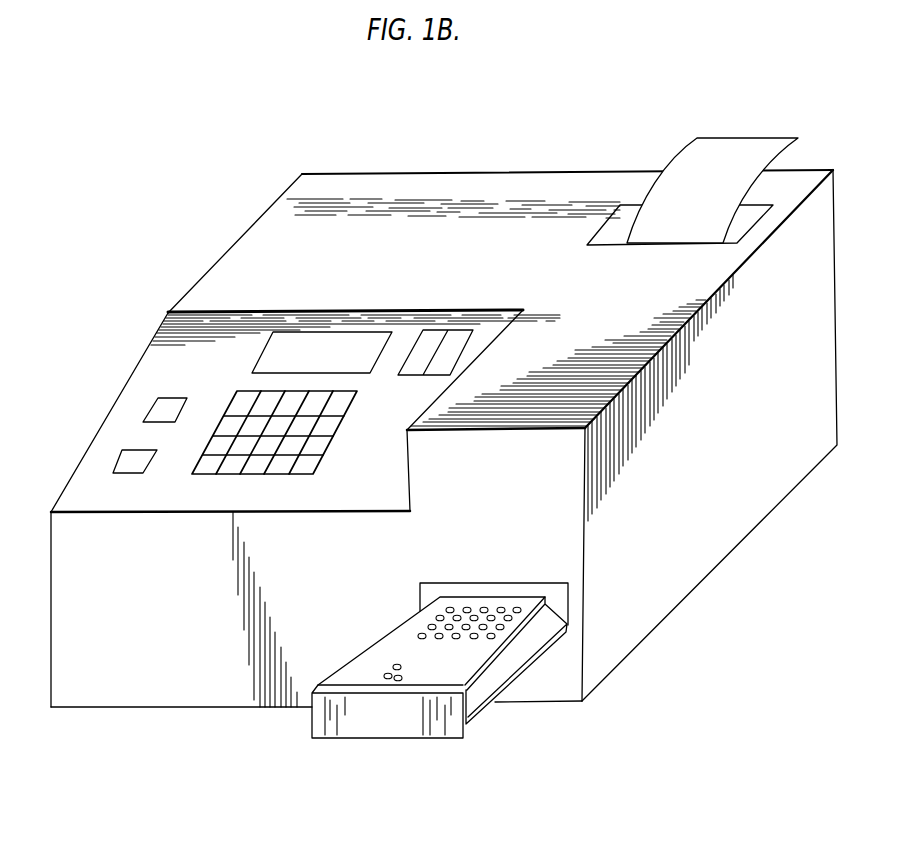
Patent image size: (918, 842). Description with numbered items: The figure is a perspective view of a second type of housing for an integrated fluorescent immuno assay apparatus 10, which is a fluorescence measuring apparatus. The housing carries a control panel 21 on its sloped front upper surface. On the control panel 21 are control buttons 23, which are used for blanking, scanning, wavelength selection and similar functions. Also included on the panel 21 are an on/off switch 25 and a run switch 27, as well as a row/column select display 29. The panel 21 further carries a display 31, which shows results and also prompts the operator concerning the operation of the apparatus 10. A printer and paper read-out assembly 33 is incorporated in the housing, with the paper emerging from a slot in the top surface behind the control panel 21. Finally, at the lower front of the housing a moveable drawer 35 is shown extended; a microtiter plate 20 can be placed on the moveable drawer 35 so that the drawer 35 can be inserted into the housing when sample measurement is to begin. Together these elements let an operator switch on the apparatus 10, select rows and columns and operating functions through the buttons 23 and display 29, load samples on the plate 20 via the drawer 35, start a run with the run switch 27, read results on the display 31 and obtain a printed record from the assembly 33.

The integrated fluorescent immuno assay apparatus 10 is at (229, 200).
The microtiter plate 20 is at (481, 677).
The control panel 21 is at (170, 347).
The control buttons 23 is at (228, 477).
The on/off switch 25 is at (115, 463).
The run switch 27 is at (148, 408).
The row/column select display 29 is at (456, 330).
The display 31 is at (337, 332).
The printer and paper read-out assembly 33 is at (774, 203).
The moveable drawer 35 is at (388, 738).